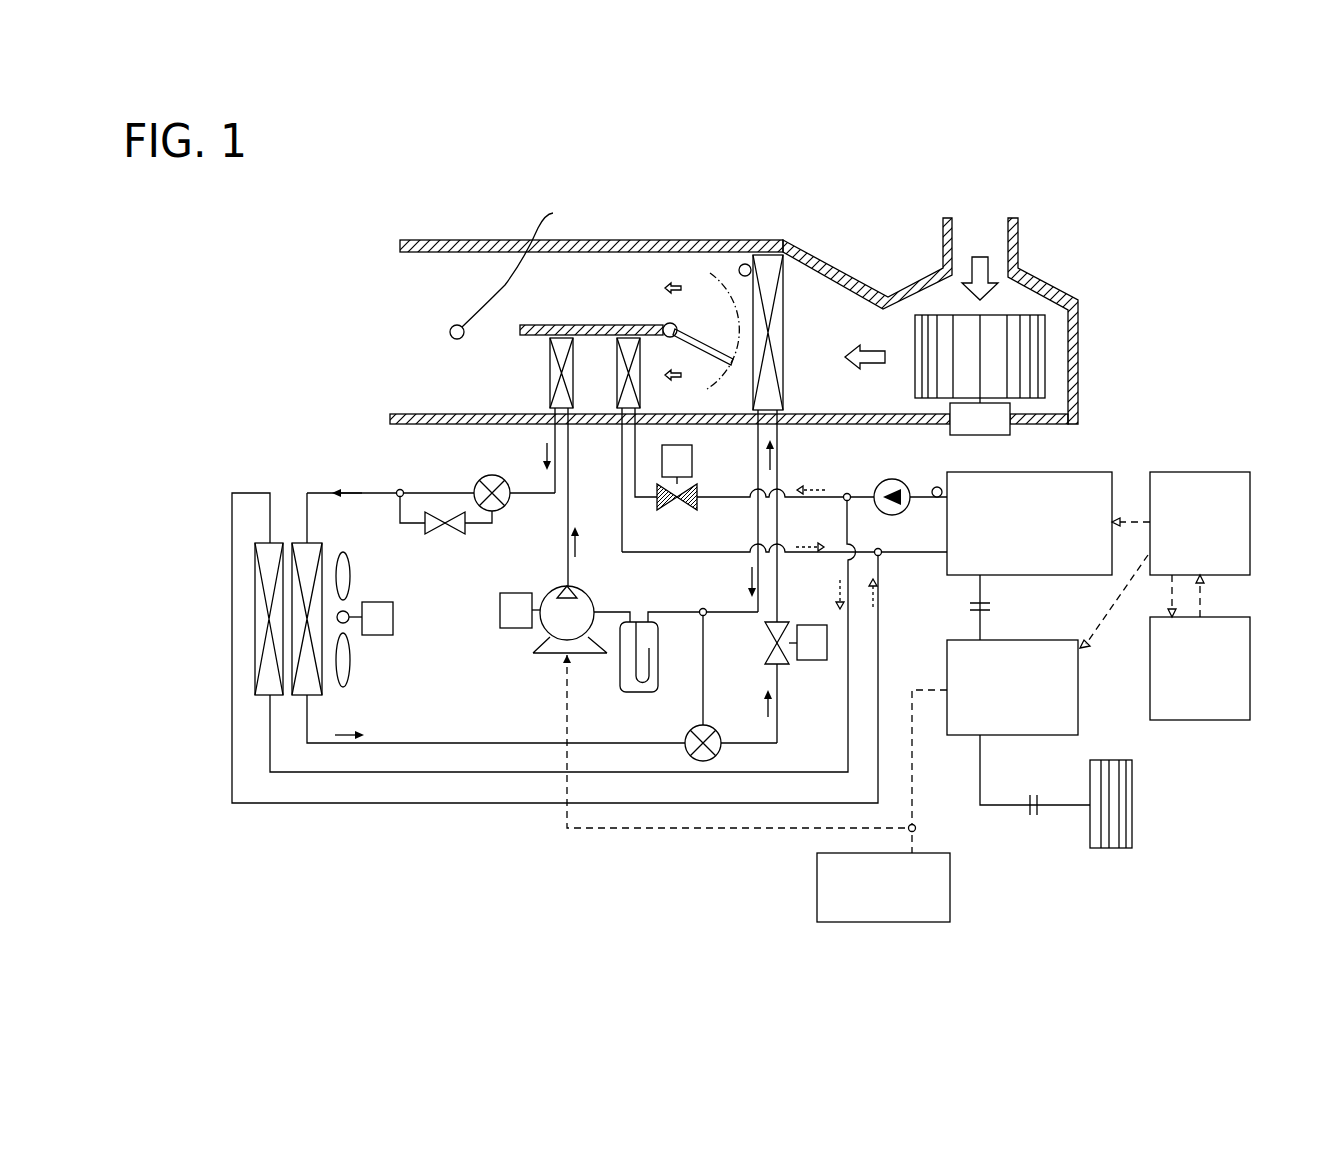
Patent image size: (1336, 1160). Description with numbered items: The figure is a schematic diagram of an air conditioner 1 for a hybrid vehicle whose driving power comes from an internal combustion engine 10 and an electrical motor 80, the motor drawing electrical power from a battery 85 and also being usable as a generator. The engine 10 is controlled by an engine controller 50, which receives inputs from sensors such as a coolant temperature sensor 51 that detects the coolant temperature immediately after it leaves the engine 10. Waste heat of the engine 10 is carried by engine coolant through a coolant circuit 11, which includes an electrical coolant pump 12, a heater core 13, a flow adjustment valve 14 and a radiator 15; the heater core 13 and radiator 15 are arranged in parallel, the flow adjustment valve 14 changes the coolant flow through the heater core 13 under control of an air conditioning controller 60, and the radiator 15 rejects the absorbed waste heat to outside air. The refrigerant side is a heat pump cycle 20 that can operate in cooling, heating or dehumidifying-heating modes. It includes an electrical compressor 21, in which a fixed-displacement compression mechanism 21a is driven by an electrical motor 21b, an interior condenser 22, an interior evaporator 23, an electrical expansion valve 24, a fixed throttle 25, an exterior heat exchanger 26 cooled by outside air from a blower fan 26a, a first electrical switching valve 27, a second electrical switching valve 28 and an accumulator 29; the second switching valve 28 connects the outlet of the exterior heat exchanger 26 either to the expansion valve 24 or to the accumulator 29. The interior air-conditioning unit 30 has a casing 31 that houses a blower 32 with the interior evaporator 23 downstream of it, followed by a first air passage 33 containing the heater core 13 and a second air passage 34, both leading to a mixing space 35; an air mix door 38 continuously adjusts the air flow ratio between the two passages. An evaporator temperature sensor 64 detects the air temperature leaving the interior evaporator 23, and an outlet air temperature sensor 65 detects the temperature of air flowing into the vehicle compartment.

The air conditioner 1 is at (320, 265).
The internal combustion engine 10 is at (1028, 575).
The coolant circuit 11 is at (889, 669).
The coolant pump 12 is at (898, 511).
The heater core 13 is at (618, 404).
The flow adjustment valve 14 is at (697, 493).
The radiator 15 is at (255, 545).
The heat pump cycle 20 is at (320, 486).
The electrical compressor 21 is at (600, 597).
The fixed-displacement compression mechanism 21a is at (547, 597).
The electrical motor 21b is at (522, 628).
The interior condenser 22 is at (548, 404).
The interior evaporator 23 is at (783, 324).
The electrical expansion valve 24 is at (785, 665).
The fixed throttle 25 is at (445, 535).
The exterior heat exchanger 26 is at (323, 545).
The blower fan 26a is at (372, 602).
The first electrical switching valve 27 is at (480, 481).
The second electrical switching valve 28 is at (716, 733).
The accumulator 29 is at (623, 680).
The interior air-conditioning unit 30 is at (889, 283).
The casing 31 is at (498, 240).
The blower 32 is at (1048, 392).
The first air passage 33 is at (686, 424).
The second air passage 34 is at (686, 256).
The mixing space 35 is at (427, 308).
The air mix door 38 is at (680, 338).
The engine controller 50 is at (1218, 472).
The coolant temperature sensor 51 is at (935, 487).
The air conditioning controller 60 is at (1218, 617).
The evaporator temperature sensor 64 is at (748, 263).
The outlet air temperature sensor 65 is at (522, 267).
The electrical motor 80 is at (1078, 670).
The battery 85 is at (952, 892).